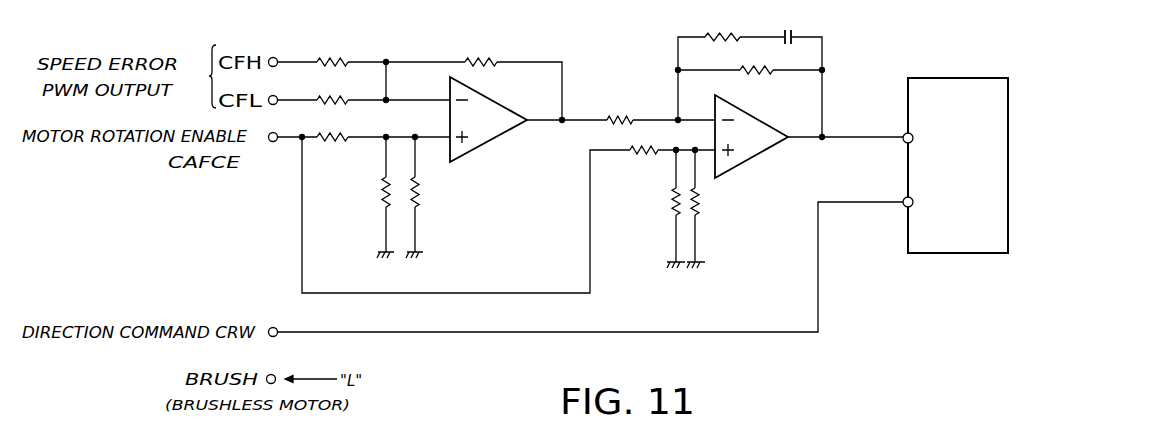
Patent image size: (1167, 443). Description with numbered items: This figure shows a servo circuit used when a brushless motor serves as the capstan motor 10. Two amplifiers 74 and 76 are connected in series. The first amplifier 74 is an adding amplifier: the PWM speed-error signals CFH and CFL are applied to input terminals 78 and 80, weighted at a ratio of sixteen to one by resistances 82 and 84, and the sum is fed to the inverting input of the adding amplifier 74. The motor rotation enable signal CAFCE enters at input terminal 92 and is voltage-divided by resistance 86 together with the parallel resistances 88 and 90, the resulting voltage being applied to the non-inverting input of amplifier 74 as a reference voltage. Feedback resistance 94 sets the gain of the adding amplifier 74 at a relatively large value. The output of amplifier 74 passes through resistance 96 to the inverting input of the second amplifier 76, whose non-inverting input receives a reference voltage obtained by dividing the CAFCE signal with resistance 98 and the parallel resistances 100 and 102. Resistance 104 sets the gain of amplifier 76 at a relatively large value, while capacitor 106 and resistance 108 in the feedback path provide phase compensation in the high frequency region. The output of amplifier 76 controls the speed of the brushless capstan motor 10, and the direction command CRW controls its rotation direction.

The capstan motor 10 is at (1009, 140).
The adding amplifier 74 is at (490, 147).
The amplifier 76 is at (753, 160).
The input terminal 78 is at (276, 58).
The input terminal 80 is at (276, 96).
The resistance 82 is at (350, 63).
The resistance 84 is at (349, 102).
The resistance 86 is at (383, 145).
The resistance 88 is at (383, 200).
The resistance 90 is at (418, 200).
The input terminal 92 is at (273, 142).
The resistance 94 is at (498, 63).
The resistor (R) 96 is at (634, 118).
The resistance 98 is at (657, 152).
The resistance 100 is at (673, 212).
The resistance 102 is at (698, 212).
The resistance 104 is at (760, 73).
The capacitor 106 is at (793, 36).
The resistance 108 is at (745, 27).